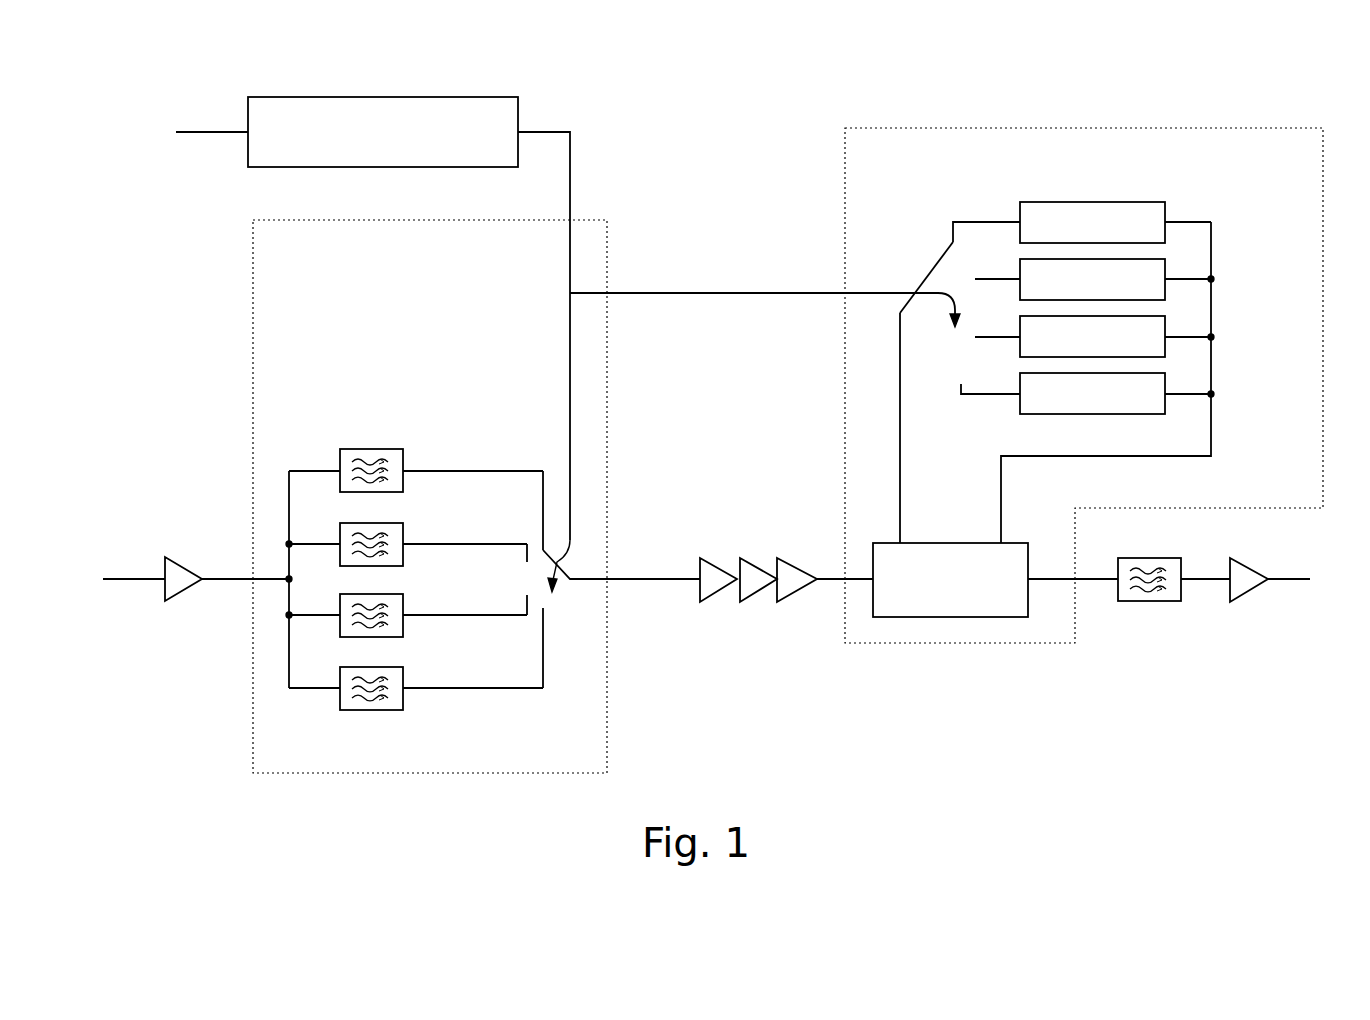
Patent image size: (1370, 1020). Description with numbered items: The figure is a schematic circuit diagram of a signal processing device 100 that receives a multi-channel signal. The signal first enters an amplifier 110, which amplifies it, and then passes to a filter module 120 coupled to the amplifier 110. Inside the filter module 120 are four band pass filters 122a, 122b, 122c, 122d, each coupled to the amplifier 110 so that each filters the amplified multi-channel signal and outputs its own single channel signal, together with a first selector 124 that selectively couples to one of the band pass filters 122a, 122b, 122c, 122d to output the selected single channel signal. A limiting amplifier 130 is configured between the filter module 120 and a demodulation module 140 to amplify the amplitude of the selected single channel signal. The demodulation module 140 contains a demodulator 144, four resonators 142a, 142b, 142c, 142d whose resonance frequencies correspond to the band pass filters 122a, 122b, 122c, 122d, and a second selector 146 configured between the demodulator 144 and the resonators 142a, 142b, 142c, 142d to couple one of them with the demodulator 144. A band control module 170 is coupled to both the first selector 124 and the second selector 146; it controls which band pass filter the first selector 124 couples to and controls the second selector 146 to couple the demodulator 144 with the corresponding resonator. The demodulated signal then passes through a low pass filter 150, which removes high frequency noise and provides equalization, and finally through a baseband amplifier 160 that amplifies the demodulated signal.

The signal processing device 100 is at (147, 80).
The amplifier 110 is at (178, 557).
The filter module 120 is at (607, 224).
The band pass filter 122a is at (403, 484).
The band pass filter 122b is at (403, 556).
The band pass filter 122c is at (403, 628).
The band pass filter 122d is at (403, 700).
The first selector 124 is at (563, 602).
The limiting amplifier 130 is at (752, 600).
The demodulation module 140 is at (1270, 127).
The resonator 142a is at (1168, 212).
The resonator 142b is at (1168, 270).
The resonator 142c is at (1168, 328).
The resonator 142d is at (1168, 385).
The demodulator 144 is at (950, 617).
The second selector 146 is at (953, 280).
The low pass filter 150 is at (1148, 598).
The baseband amplifier 160 is at (1243, 584).
The band control module 170 is at (478, 97).